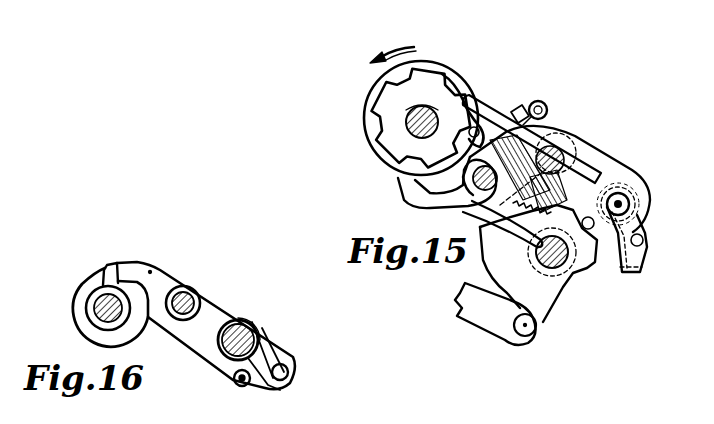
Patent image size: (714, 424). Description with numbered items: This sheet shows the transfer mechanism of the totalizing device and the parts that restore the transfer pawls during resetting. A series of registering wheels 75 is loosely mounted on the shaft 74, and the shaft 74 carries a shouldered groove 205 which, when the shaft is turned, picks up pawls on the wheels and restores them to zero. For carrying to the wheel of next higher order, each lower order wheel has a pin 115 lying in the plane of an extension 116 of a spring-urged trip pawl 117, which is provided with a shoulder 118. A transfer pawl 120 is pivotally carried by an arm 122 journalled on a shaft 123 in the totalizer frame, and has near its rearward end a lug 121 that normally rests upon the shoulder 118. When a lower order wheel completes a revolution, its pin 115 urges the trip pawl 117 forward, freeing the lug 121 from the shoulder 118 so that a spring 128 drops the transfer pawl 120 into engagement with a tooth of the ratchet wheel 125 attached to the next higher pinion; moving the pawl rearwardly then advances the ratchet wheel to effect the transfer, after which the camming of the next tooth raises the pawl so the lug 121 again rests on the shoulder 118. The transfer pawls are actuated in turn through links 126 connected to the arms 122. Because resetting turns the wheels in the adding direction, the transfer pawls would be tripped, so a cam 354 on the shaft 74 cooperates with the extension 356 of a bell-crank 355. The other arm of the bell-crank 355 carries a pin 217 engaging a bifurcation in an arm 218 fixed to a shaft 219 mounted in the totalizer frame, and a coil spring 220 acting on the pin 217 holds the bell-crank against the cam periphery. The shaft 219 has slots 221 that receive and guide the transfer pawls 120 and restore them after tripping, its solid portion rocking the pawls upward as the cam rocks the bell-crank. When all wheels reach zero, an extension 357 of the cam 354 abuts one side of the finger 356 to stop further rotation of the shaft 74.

In FIG. 15, the registering wheel 75 is at (436, 64).
In FIG. 15, the shaft 74 is at (405, 122).
In FIG. 16, the shaft 74 is at (98, 308).
In FIG. 15, the extension of trip pawl 116 is at (477, 128).
In FIG. 15, the shouldered groove 205 is at (416, 104).
In FIG. 15, the ratchet wheel 125 is at (392, 103).
In FIG. 15, the pin 115 is at (472, 136).
In FIG. 15, the shoulder 118 is at (502, 113).
In FIG. 15, the lug 121 is at (521, 108).
In FIG. 15, the trip pawl 117 is at (550, 108).
In FIG. 15, the slot 221 is at (562, 150).
In FIG. 15, the transfer pawl 120 is at (597, 164).
In FIG. 15, the slotted shaft 219 is at (618, 185).
In FIG. 16, the slotted shaft 219 is at (242, 328).
In FIG. 15, the spring 128 is at (630, 226).
In FIG. 15, the shaft 123 is at (530, 262).
In FIG. 15, the arm 122 is at (555, 281).
In FIG. 15, the link 126 is at (470, 303).
In FIG. 16, the cam 354 is at (123, 337).
In FIG. 16, the bell-crank 355 is at (151, 270).
In FIG. 16, the extension 356 is at (125, 302).
In FIG. 16, the extension of cam 357 is at (112, 265).
In FIG. 16, the arm 218 is at (263, 338).
In FIG. 16, the coil spring 220 is at (270, 360).
In FIG. 16, the pin 217 is at (289, 372).